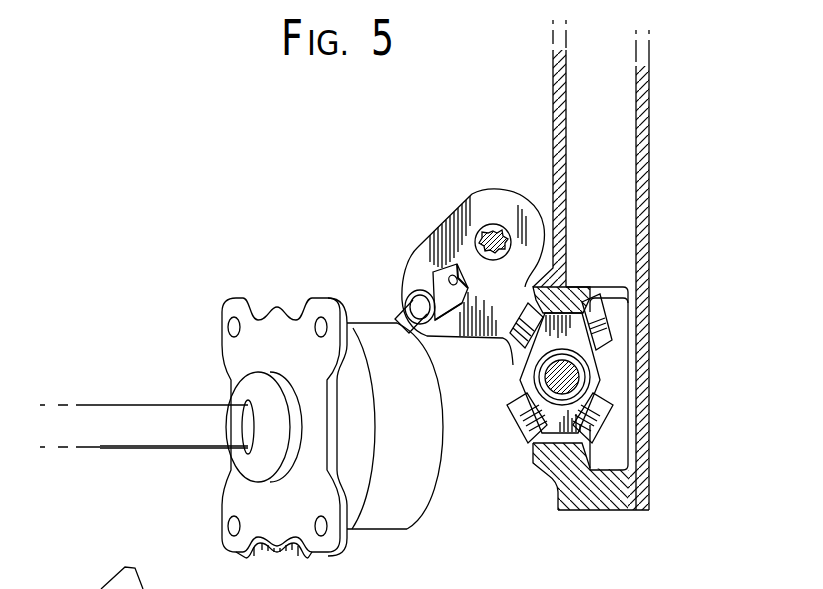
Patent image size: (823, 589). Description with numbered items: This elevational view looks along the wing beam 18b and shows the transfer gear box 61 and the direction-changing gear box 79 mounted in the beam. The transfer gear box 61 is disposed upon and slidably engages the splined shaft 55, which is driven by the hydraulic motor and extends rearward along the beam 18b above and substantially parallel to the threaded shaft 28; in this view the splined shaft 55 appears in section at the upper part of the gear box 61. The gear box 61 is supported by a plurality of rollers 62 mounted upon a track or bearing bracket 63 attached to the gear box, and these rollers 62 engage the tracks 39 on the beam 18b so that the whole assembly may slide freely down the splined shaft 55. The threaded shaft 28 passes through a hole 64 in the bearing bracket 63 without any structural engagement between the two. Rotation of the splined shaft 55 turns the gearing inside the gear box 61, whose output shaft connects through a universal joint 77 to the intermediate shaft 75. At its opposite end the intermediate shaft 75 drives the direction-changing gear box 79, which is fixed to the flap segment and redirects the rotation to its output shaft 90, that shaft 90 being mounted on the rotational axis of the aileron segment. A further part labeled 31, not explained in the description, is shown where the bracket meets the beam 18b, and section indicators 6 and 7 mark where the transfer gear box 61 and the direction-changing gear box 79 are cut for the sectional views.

The beam 18b is at (555, 103).
The mounting bracket 31 is at (612, 296).
The tracks 39 is at (533, 452).
The transfer gear box 61 is at (438, 236).
The splined shaft 55 is at (492, 224).
The universal joint 77 is at (432, 274).
The intermediate shaft 75 is at (396, 314).
The section line 6- 6 is at (545, 186).
The output shaft 90 is at (168, 403).
The direction-changing gear box 79 is at (424, 524).
The section line 7- 7 is at (172, 427).
The bearing bracket 63 is at (518, 400).
The hole 64 is at (536, 371).
The threaded shaft 28 is at (545, 378).
The rollers 62 is at (522, 440).